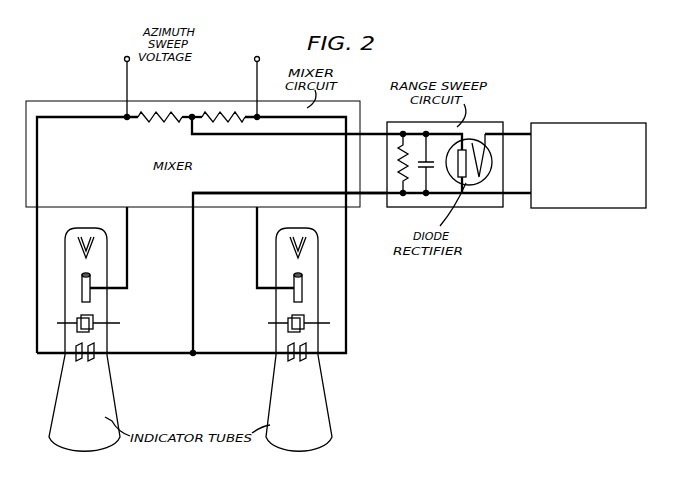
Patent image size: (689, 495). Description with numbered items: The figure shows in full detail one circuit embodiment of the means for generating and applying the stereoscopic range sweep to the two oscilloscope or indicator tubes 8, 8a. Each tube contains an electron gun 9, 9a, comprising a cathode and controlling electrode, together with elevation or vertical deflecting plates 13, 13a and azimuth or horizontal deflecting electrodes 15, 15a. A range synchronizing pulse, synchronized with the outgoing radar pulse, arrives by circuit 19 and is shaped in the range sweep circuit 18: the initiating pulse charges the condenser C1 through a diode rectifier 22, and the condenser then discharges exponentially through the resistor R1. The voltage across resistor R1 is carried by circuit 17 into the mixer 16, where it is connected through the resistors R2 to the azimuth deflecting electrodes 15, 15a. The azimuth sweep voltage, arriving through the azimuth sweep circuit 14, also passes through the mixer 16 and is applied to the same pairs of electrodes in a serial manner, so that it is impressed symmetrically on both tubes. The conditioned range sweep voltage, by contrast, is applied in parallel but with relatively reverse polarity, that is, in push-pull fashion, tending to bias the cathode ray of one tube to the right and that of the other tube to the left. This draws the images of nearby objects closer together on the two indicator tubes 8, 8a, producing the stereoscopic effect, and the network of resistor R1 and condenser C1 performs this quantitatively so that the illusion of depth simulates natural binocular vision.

The indicator tube 8 is at (105, 392).
The indicator tube 8a is at (317, 393).
The electron gun 9 is at (82, 244).
The electron gun 9a is at (294, 249).
The elevation deflecting plate 13 is at (93, 320).
The elevation deflecting plate 13a is at (290, 322).
The azimuth sweep circuit 14 is at (200, 75).
The azimuth deflecting electrode 15 is at (93, 349).
The azimuth deflecting electrode 15a is at (300, 350).
The mixer 16 is at (67, 125).
The circuit 17 is at (370, 190).
The range sweep circuit 18 is at (488, 128).
The range synchronizing pulse circuit 19 is at (585, 123).
The diode rectifier 22 is at (476, 184).
The resistor R1 is at (396, 165).
The resistor R2 is at (161, 124).
The condenser C1 is at (432, 166).